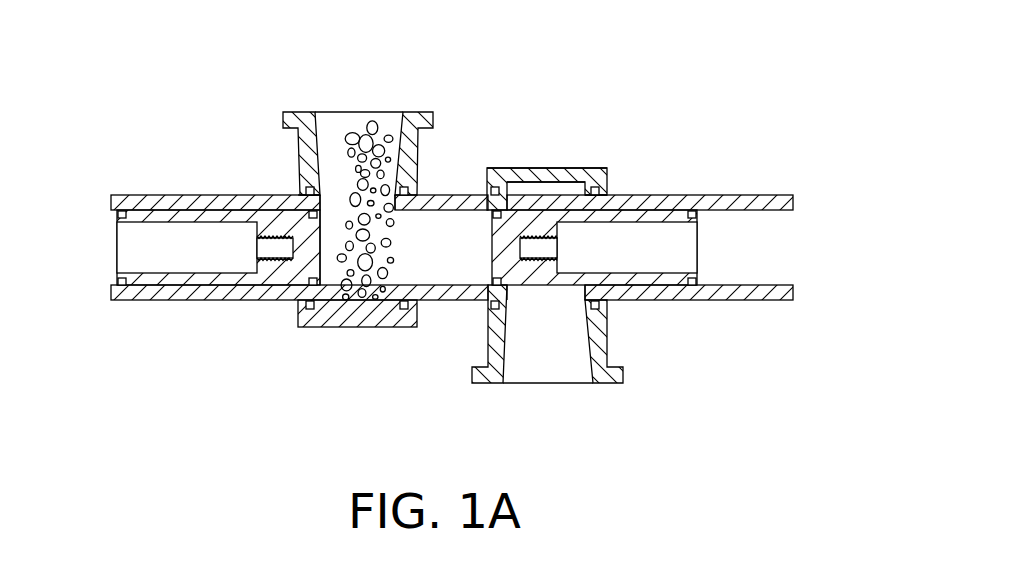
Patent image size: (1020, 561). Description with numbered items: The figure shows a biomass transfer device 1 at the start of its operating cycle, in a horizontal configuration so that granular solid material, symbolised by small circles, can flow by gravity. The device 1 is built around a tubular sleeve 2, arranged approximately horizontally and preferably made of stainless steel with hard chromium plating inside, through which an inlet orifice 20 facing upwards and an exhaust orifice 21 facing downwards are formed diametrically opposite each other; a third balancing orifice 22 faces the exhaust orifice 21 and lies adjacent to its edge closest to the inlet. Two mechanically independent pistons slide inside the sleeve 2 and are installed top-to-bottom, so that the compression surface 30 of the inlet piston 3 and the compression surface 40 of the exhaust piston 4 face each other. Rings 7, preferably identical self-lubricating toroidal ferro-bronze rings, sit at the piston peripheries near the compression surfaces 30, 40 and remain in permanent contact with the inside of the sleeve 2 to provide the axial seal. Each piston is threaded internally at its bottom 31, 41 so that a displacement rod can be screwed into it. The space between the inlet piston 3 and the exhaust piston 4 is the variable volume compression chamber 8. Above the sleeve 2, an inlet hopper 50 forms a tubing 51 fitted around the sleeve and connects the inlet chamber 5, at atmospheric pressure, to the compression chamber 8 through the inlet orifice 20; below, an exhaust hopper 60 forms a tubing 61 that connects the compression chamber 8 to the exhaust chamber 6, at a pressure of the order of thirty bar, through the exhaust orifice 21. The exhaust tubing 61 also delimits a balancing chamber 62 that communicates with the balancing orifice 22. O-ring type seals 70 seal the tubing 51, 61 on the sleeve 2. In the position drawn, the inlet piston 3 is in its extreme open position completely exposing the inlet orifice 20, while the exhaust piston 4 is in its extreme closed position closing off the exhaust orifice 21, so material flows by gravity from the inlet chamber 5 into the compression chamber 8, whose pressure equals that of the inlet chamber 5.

The transfer device 1 is at (634, 103).
The tubular sleeve 2 is at (160, 200).
The inlet piston 3 is at (198, 284).
The exhaust piston 4 is at (667, 205).
The inlet chamber 5 is at (370, 105).
The exhaust chamber 6 is at (538, 357).
The rings 7 is at (118, 288).
The compression chamber 8 is at (400, 259).
The inlet orifice 20 is at (370, 197).
The exhaust orifice 21 is at (531, 290).
The balancing orifice 22 is at (528, 195).
The compression surface 30 is at (320, 255).
The internal thread 31 is at (262, 248).
The compression surface 40 is at (488, 262).
The internal thread 41 is at (566, 248).
The inlet hopper 50 is at (298, 118).
The inlet tubing 51 is at (362, 315).
The exhaust hopper 60 is at (608, 338).
The exhaust tubing 61 is at (505, 178).
The balancing chamber 62 is at (572, 180).
The O-ring seals 70 is at (302, 192).